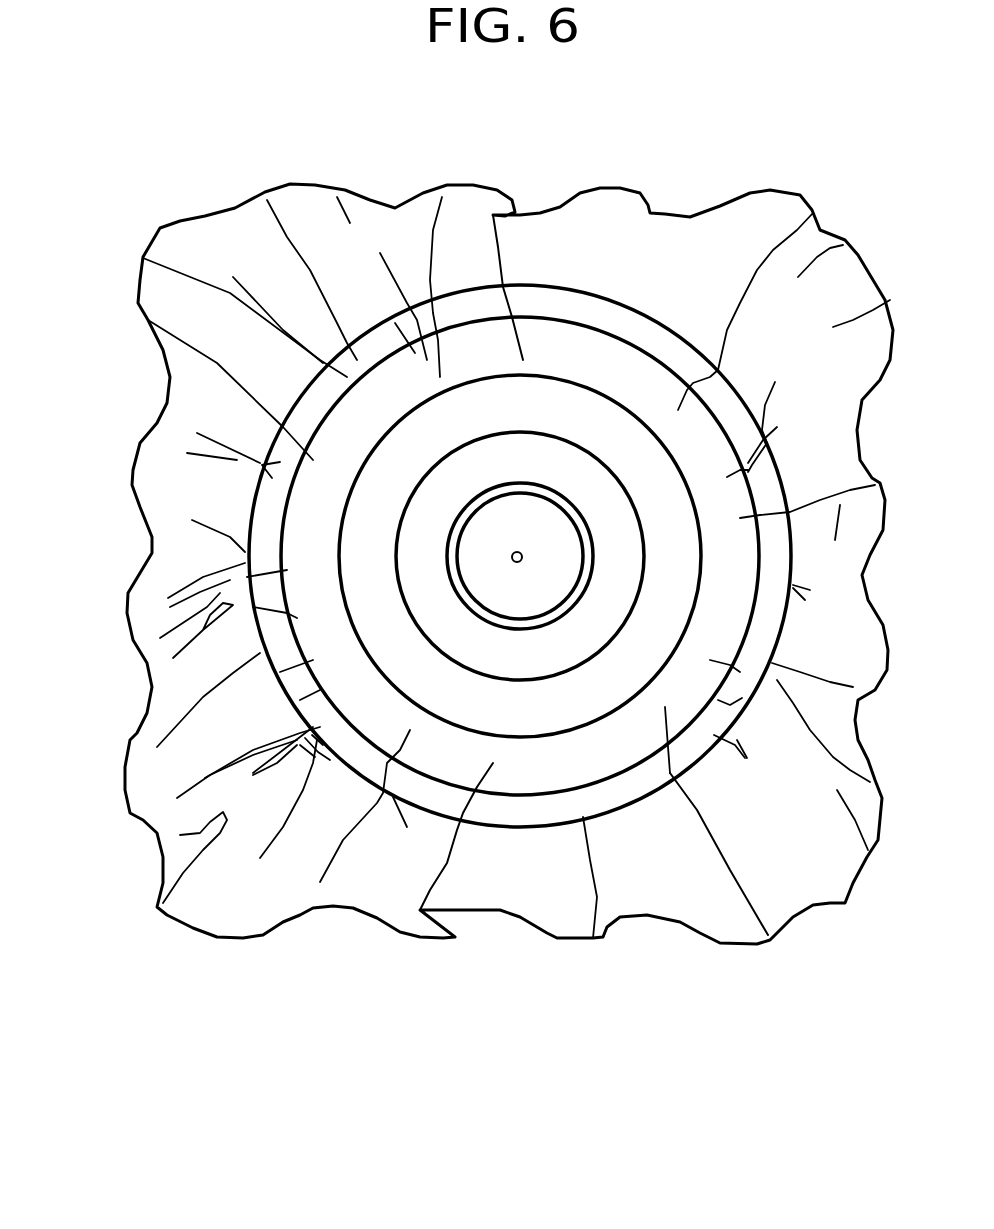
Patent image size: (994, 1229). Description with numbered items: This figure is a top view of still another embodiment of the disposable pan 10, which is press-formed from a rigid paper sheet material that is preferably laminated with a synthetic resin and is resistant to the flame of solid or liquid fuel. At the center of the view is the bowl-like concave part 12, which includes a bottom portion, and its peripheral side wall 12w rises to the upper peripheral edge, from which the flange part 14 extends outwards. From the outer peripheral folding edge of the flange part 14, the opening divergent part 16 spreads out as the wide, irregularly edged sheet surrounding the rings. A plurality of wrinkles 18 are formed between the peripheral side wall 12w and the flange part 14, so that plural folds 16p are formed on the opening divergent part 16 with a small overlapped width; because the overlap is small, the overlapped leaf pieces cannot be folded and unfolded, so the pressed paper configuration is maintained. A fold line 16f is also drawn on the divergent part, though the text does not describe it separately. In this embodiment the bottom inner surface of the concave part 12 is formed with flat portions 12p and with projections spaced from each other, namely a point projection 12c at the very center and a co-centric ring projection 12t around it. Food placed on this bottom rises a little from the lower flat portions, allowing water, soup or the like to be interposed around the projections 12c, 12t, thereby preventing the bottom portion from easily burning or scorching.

The disposable pan 10 is at (126, 293).
The bowl-like concave part 12 is at (530, 668).
The flat portions 12p is at (547, 413).
The co-centric ring projection 12t is at (452, 550).
The point projection 12c is at (517, 562).
The peripheral side wall 12w is at (406, 733).
The flange part 14 is at (613, 788).
The opening divergent part 16 is at (673, 883).
The folds 16p is at (443, 920).
The fold of cloth 16f is at (553, 943).
The wrinkles 18 is at (503, 287).